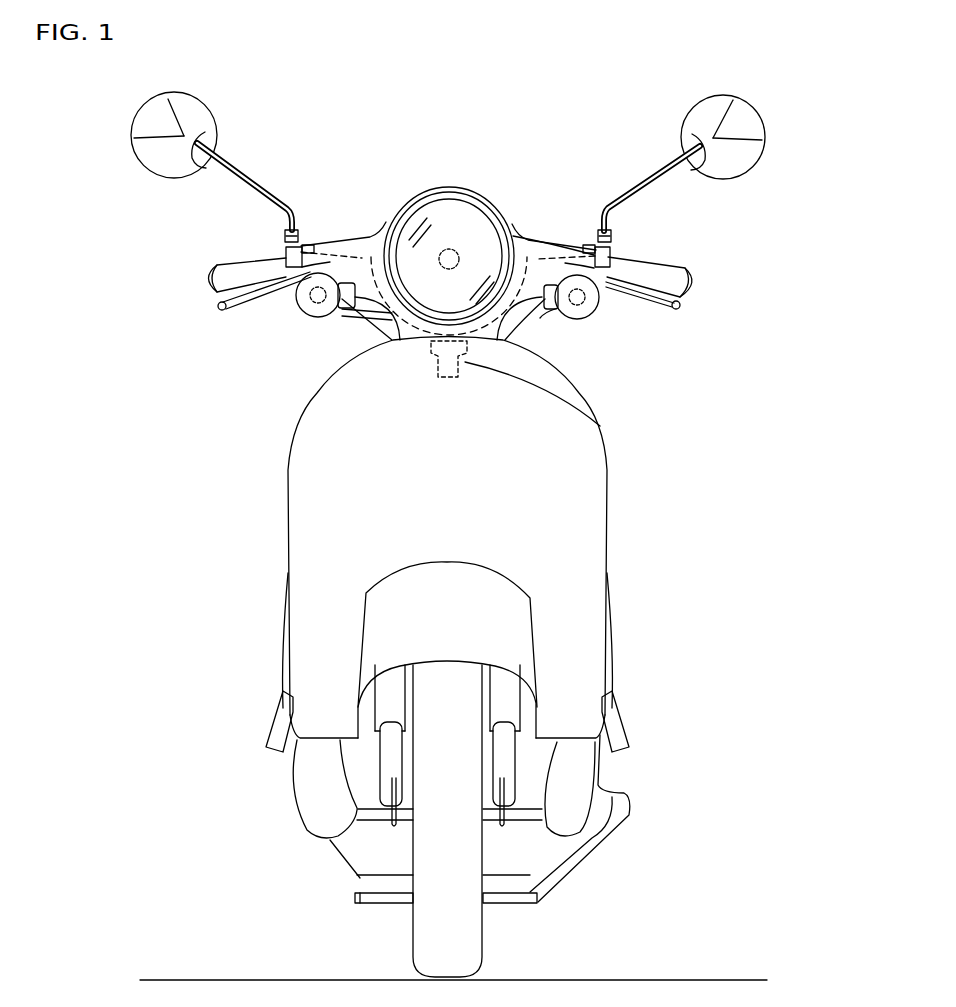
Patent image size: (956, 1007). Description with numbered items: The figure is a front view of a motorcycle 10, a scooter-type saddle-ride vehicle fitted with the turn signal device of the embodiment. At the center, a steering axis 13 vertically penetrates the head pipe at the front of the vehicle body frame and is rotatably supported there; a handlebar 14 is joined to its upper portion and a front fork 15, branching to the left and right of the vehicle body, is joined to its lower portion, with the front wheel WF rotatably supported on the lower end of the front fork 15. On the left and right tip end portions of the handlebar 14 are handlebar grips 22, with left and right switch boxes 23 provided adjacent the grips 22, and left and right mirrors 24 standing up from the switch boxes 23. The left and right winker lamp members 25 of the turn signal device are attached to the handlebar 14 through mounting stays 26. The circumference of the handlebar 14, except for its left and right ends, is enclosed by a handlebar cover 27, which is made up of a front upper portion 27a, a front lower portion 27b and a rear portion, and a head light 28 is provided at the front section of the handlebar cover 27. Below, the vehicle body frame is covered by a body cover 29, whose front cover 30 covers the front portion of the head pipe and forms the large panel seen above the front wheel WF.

The motorcycle 10 is at (632, 469).
The steering axis 13 is at (605, 427).
The handlebar 14 is at (523, 292).
The front fork 15 is at (392, 766).
The handlebar grip 22 is at (258, 262).
The switch box 23 is at (300, 250).
The mirror 24 is at (198, 111).
The lamp member 25 is at (306, 301).
The mounting stay 26 is at (352, 321).
The handlebar cover 27 is at (356, 239).
The front upper portion 27a is at (532, 238).
The front lower portion 27b is at (553, 310).
The head light 28 is at (451, 222).
The body cover 29 is at (287, 513).
The front cover 30 is at (568, 527).
The front wheel WF is at (460, 945).